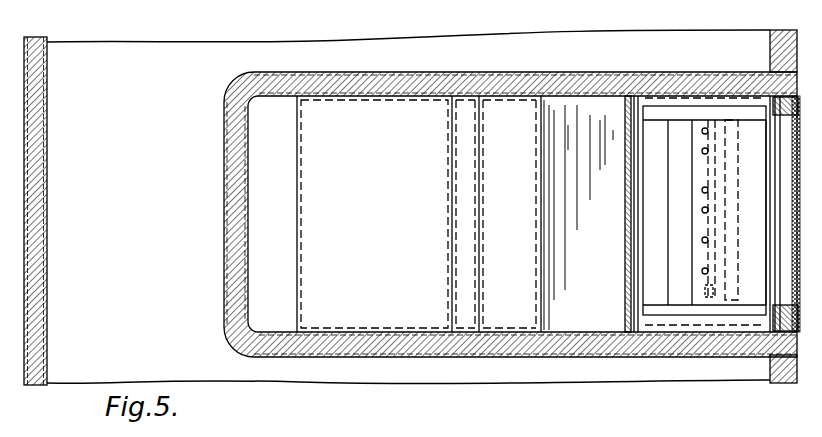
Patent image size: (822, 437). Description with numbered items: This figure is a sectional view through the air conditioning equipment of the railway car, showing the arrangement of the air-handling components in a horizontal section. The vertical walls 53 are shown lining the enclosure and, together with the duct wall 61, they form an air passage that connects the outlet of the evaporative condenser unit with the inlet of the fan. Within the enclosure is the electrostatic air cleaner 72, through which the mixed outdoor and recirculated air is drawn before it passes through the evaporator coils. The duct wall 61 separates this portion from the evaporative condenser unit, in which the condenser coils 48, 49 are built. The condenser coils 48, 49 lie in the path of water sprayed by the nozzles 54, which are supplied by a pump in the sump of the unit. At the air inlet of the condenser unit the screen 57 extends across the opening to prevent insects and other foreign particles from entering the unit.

The vertical walls 53 is at (248, 210).
The electrostatic air cleaner 72 is at (398, 220).
The duct wall 61 is at (625, 264).
The condenser coil 48 is at (704, 211).
The condenser coil 49 is at (705, 212).
The nozzles 54 is at (700, 271).
The screen 57 is at (792, 168).